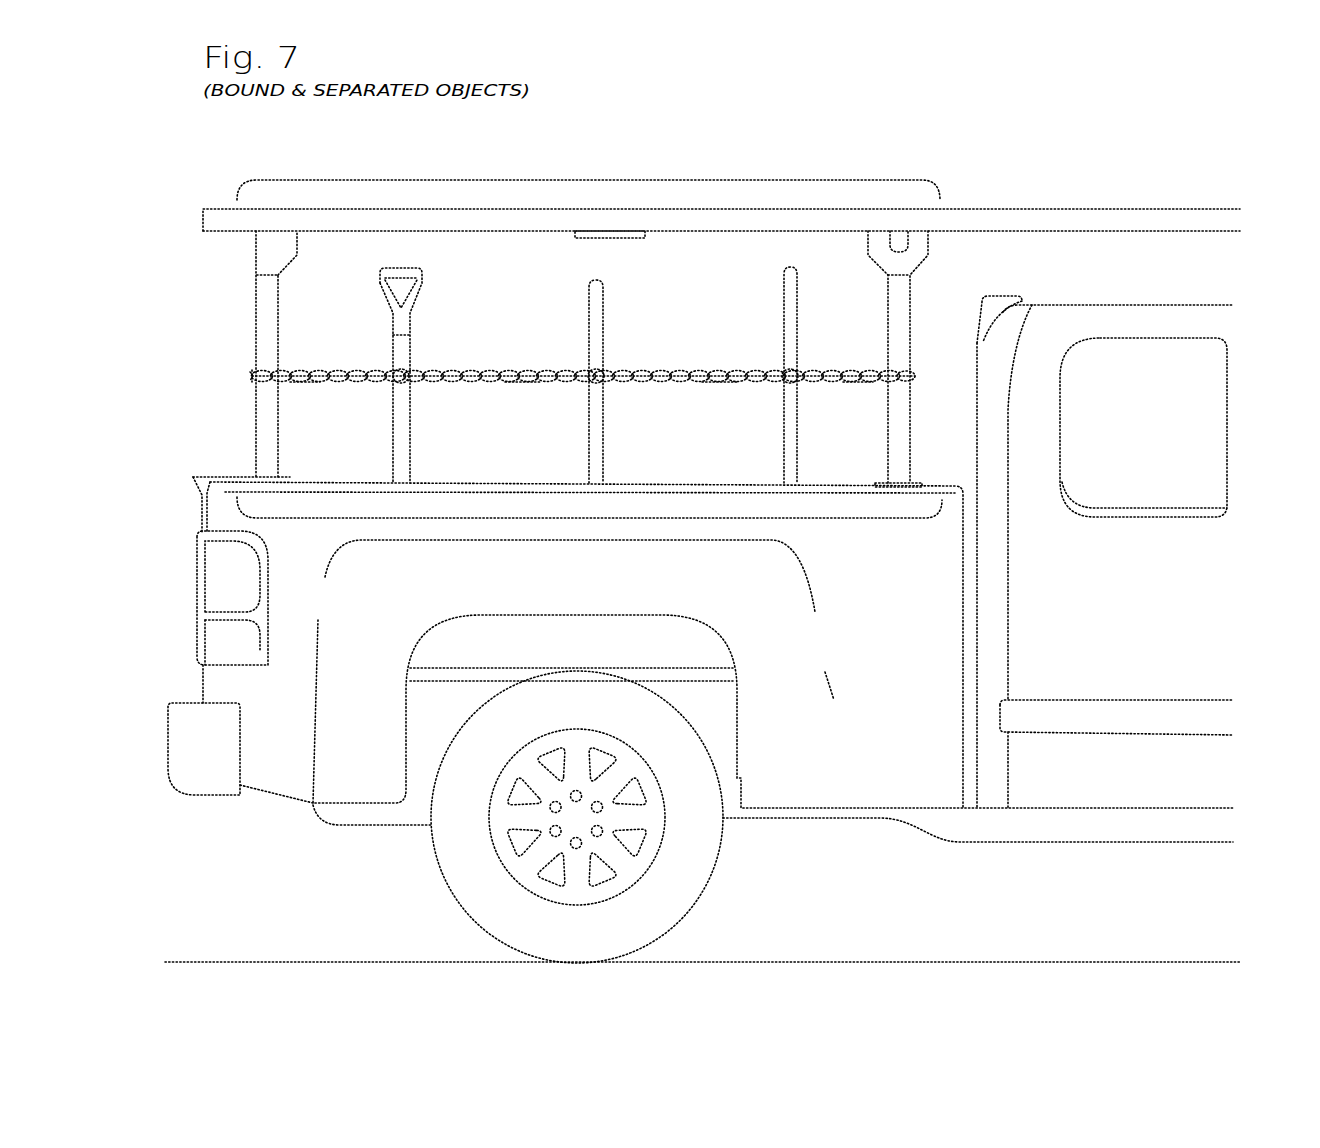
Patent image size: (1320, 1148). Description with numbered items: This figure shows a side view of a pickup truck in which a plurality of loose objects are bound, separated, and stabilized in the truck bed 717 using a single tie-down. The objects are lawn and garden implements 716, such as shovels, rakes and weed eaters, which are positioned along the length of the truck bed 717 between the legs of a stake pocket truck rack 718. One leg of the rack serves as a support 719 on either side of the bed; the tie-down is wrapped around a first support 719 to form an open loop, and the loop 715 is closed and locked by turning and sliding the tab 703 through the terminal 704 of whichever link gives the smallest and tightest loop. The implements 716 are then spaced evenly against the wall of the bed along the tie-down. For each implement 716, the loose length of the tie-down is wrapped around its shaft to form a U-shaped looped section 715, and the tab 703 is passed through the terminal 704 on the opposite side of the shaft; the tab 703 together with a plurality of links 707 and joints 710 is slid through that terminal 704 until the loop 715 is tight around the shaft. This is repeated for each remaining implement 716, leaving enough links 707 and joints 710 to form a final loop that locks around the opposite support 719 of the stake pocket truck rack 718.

The stake pocket truck rack 718 is at (589, 180).
The support 719 is at (267, 304).
The implement 716 is at (403, 408).
The joint 710 is at (487, 372).
The looped section 715 is at (400, 372).
The tab 703 is at (305, 383).
The terminal 704 is at (523, 381).
The link 707 is at (254, 386).
The truck bed 717 is at (588, 520).